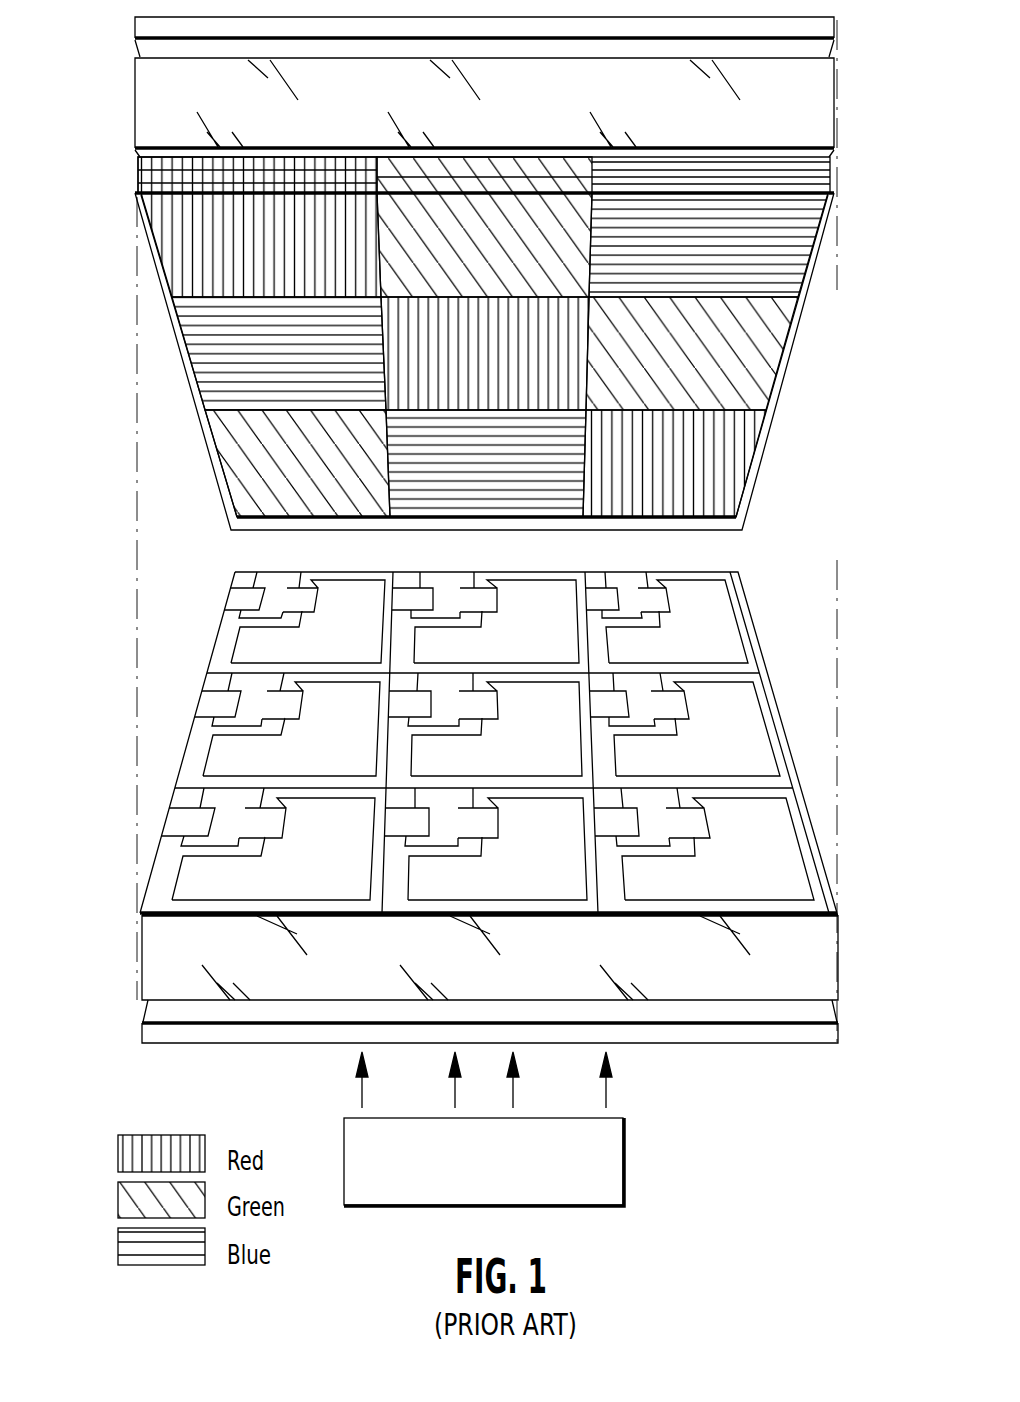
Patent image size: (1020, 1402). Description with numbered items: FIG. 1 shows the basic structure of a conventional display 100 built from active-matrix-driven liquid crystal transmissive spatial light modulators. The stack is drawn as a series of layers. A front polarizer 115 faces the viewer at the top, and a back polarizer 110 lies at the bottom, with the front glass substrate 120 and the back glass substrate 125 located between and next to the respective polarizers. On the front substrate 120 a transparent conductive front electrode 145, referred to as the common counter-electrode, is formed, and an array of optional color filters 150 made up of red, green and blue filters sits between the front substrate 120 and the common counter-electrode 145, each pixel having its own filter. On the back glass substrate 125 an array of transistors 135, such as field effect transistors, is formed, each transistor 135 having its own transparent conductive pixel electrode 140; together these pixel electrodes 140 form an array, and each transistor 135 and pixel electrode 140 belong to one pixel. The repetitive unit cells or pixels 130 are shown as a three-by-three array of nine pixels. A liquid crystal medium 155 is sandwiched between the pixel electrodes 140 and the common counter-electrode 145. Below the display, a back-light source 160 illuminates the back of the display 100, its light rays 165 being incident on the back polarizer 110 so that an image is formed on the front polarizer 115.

The display 100 is at (807, 1145).
The back polarizer 110 is at (148, 1035).
The front polarizer 115 is at (135, 23).
The front glass substrate 120 is at (150, 99).
The back glass substrate 125 is at (158, 963).
The pixels 130 is at (782, 601).
The transistors 135 is at (662, 708).
The pixel electrode 140 is at (757, 763).
The front electrode 145 is at (138, 186).
The color filters 150 is at (138, 165).
The liquid crystal medium 155 is at (182, 600).
The back-light source 160 is at (612, 1152).
The light rays 165 is at (608, 1092).